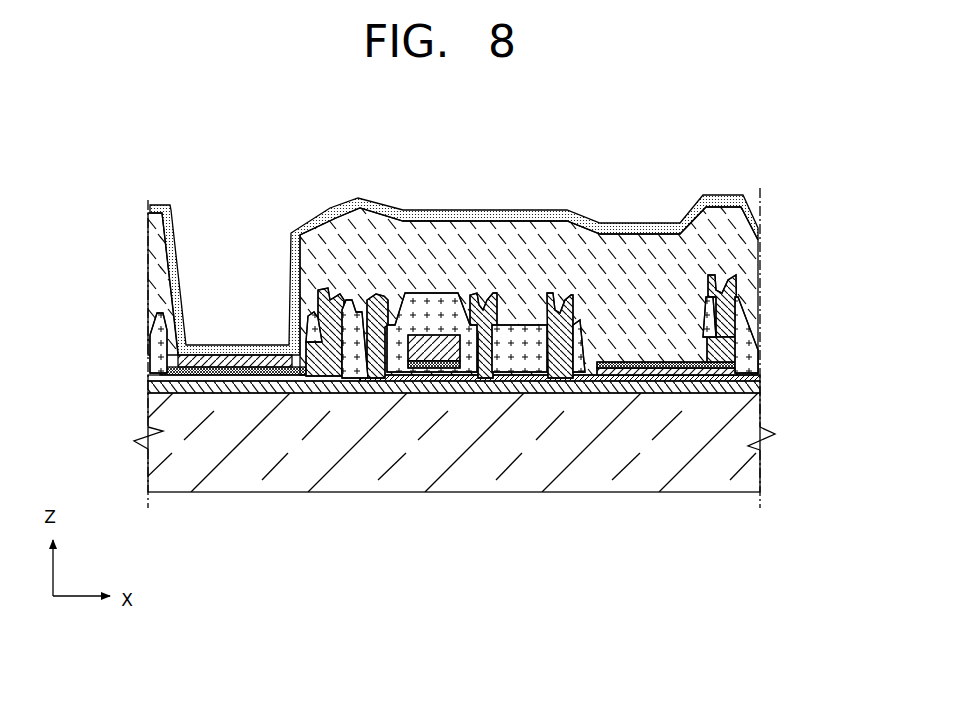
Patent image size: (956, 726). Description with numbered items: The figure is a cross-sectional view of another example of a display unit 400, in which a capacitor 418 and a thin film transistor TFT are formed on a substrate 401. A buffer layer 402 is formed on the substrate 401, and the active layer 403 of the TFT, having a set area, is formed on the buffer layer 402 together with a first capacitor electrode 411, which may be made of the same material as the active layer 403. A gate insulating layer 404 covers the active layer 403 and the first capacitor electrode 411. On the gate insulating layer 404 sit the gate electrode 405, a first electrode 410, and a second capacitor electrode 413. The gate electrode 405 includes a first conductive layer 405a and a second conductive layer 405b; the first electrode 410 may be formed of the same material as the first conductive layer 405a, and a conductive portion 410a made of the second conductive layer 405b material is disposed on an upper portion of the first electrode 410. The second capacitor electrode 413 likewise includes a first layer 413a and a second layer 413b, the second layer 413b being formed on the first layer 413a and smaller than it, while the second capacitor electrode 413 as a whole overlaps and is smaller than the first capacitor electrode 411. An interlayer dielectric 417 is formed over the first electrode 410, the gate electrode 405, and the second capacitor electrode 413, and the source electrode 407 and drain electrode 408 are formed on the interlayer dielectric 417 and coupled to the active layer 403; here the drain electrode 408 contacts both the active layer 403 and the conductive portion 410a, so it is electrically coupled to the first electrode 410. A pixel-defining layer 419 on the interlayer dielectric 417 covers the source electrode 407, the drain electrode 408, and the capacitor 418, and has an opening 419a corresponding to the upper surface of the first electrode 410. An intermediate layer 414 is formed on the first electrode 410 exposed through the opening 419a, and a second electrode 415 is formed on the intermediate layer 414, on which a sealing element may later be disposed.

The display apparatus 400 is at (660, 136).
The substrate 401 is at (150, 460).
The buffer layer 402 is at (150, 387).
The active layer 403 is at (492, 381).
The gate insulating layer 404 is at (150, 376).
The gate electrode 405 is at (440, 454).
The first conductive layer 405a is at (422, 368).
The second conductive layer 405b is at (447, 361).
The source electrode 407 is at (482, 300).
The drain electrode 408 is at (362, 292).
The first electrode 410 is at (212, 367).
The conductive portion 410a is at (325, 375).
The first capacitor electrode 411 is at (615, 375).
The second capacitor electrode 413 is at (676, 424).
The first layer 413a is at (682, 368).
The second layer 413b is at (717, 368).
The intermediate layer 414 is at (237, 358).
The second electrode 415 is at (257, 346).
The interlayer dielectric 417 is at (753, 364).
The capacitor 418 is at (673, 443).
The pixel-defining layer 419 is at (545, 237).
The opening 419a is at (166, 233).
The thin film transistor TFT is at (445, 360).